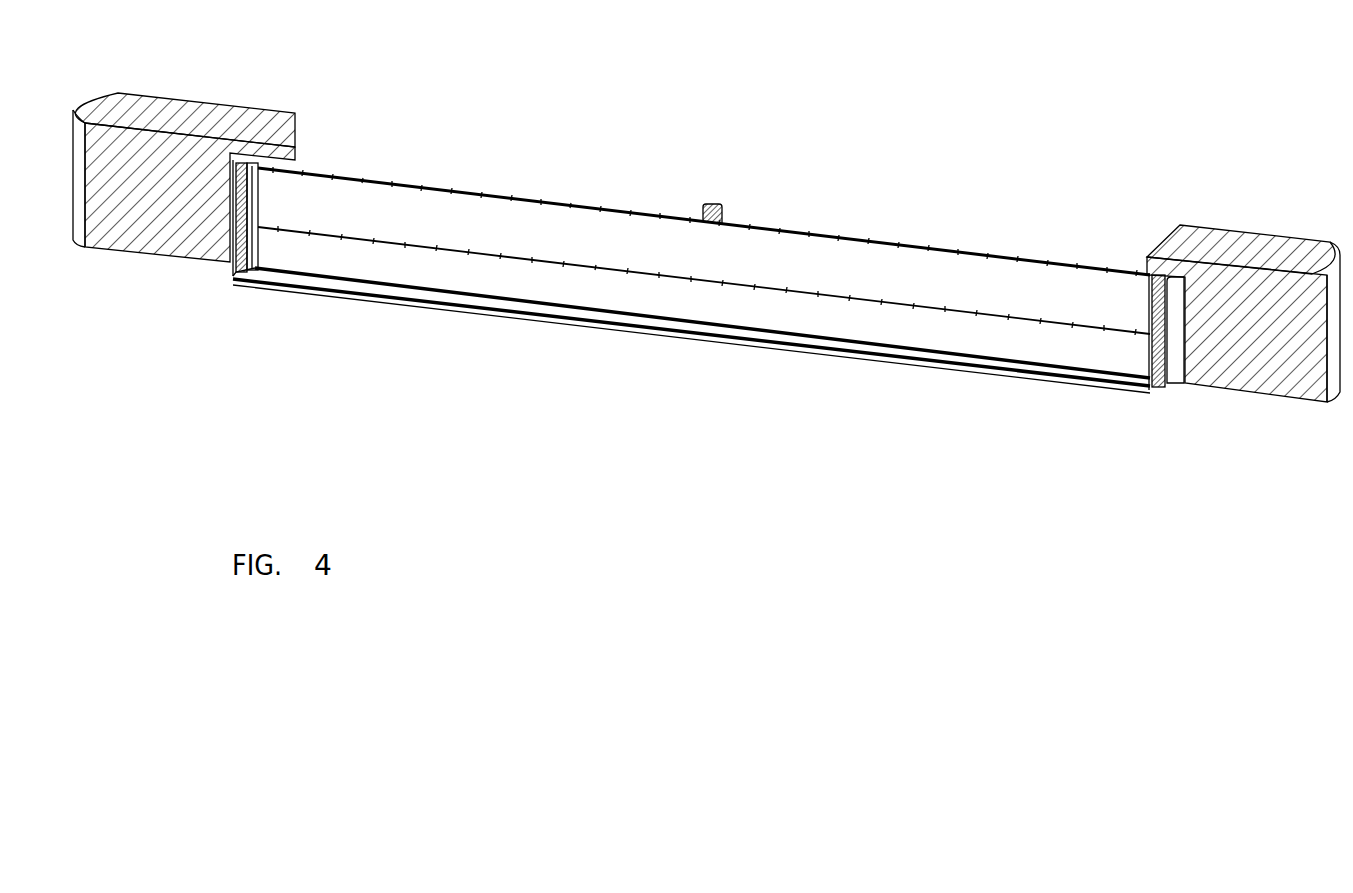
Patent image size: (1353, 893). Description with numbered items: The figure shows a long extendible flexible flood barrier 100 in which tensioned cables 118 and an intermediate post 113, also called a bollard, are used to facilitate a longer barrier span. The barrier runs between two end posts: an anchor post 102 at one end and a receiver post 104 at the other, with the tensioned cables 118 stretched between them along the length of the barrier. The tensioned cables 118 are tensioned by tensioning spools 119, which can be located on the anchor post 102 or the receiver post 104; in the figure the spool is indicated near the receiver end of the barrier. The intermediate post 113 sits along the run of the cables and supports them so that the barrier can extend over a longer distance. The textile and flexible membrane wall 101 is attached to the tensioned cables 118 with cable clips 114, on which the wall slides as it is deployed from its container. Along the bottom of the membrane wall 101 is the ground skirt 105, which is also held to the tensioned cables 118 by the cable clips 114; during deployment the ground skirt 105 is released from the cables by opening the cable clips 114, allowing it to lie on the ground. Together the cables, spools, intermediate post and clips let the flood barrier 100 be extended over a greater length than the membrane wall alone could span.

The extendible flexible flood barrier 100 is at (968, 153).
The flexible membrane wall 101 is at (466, 219).
The anchor post 102 is at (249, 206).
The receiver post 104 is at (1152, 305).
The ground skirt 105 is at (446, 309).
The intermediate post 113 is at (716, 198).
The cable clip 114 is at (565, 209).
The tensioned cable 118 is at (753, 322).
The tensioning spool 119 is at (1151, 341).